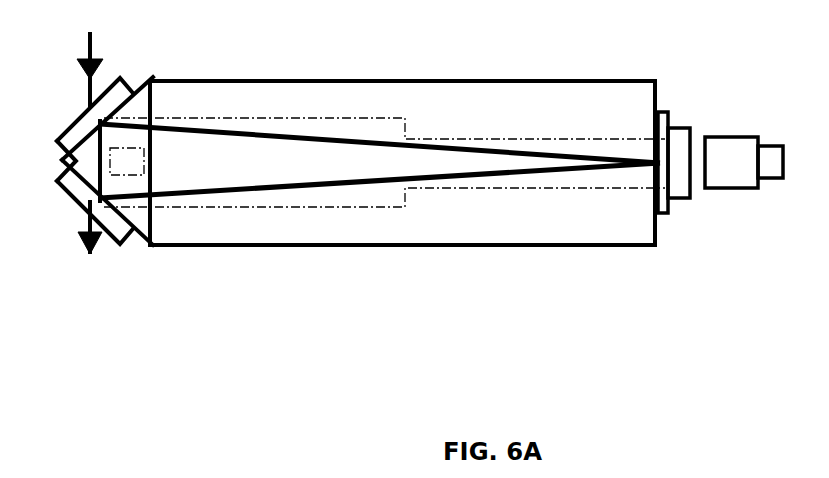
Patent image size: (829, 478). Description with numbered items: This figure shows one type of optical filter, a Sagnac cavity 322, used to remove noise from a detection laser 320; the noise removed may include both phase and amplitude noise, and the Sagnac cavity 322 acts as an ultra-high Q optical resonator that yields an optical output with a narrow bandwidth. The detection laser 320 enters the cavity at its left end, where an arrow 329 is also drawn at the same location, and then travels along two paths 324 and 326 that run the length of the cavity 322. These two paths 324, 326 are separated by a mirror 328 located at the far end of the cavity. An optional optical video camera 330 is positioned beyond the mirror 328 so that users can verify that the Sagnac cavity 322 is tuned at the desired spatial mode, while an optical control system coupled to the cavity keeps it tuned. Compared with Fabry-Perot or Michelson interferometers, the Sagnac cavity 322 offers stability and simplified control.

The detection laser 320 is at (90, 37).
The Sagnac cavity 322 is at (482, 80).
The first path 324 is at (363, 140).
The second path 326 is at (197, 190).
The mirror 328 is at (668, 112).
The output beam 329 is at (88, 212).
The optical video camera 330 is at (727, 137).